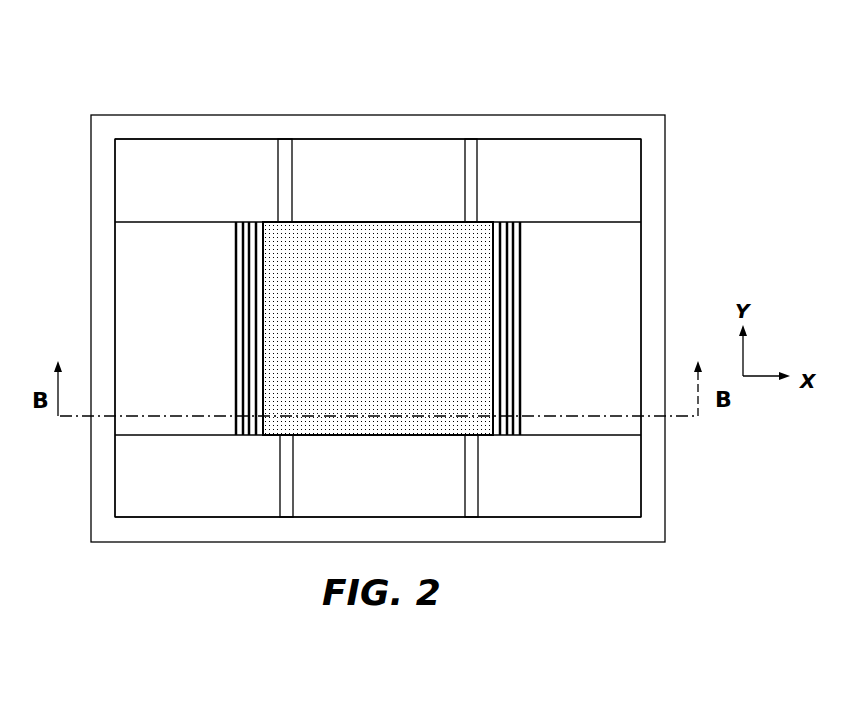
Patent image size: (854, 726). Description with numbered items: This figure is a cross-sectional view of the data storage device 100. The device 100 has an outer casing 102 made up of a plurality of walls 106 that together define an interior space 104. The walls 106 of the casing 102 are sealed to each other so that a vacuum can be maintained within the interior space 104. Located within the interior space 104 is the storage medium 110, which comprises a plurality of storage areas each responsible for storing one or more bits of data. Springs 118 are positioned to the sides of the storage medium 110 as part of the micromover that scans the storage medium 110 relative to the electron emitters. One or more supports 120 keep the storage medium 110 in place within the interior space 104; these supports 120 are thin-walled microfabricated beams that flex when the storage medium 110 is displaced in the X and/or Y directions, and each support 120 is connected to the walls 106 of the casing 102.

The data storage device 100 is at (692, 64).
The outer casing 102 is at (686, 170).
The interior space 104 is at (213, 500).
The walls 106 is at (548, 125).
The storage medium 110 is at (396, 338).
The springs 118 is at (222, 360).
The supports 120 is at (292, 175).